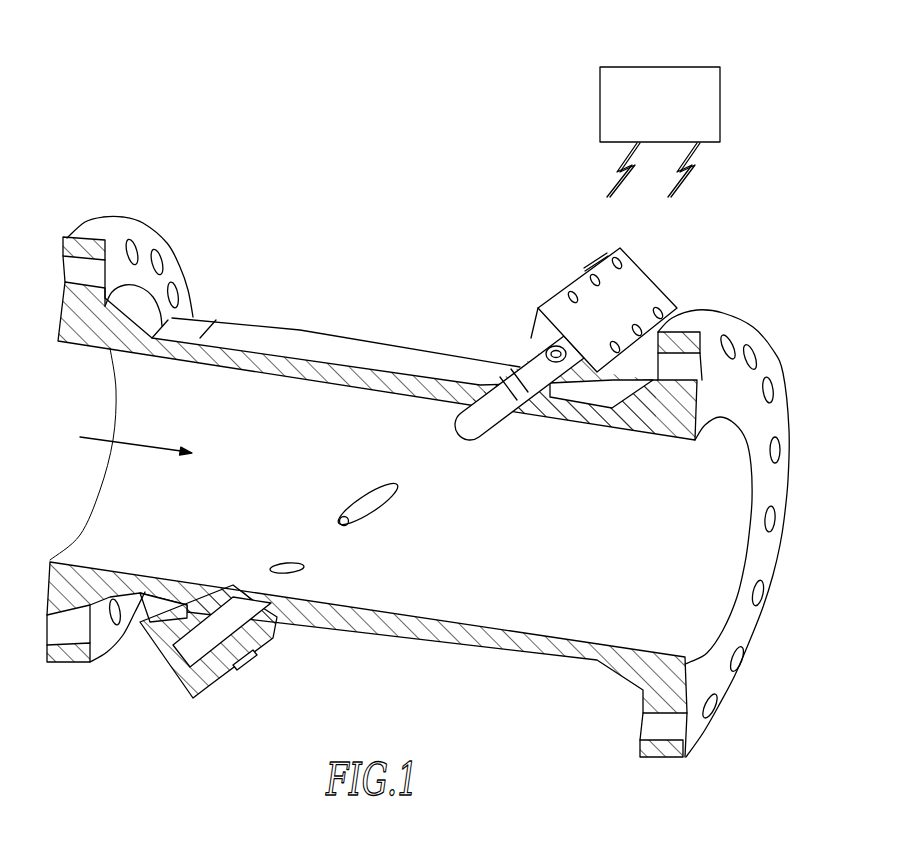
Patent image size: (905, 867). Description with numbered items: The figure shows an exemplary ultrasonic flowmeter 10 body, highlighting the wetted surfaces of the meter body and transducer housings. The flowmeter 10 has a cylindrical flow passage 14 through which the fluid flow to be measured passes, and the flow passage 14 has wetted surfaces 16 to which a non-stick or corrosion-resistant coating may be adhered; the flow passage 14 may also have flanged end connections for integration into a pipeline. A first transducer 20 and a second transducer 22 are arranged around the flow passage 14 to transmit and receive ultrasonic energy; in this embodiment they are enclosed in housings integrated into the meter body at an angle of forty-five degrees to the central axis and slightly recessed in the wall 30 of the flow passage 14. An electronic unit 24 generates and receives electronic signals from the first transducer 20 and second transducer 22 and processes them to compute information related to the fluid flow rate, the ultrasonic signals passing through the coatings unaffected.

The ultrasonic flowmeter 10 is at (216, 284).
The flow passage 14 is at (70, 499).
The wetted surfaces 16 is at (290, 594).
The first transducer 20 is at (511, 332).
The second transducer 22 is at (291, 663).
The electronic unit 24 is at (677, 66).
The wall 30 is at (294, 326).